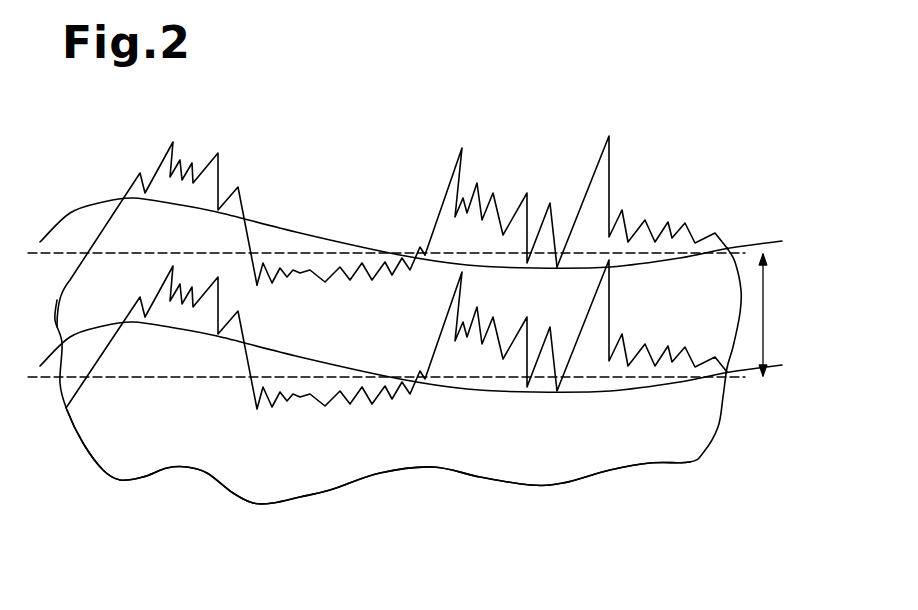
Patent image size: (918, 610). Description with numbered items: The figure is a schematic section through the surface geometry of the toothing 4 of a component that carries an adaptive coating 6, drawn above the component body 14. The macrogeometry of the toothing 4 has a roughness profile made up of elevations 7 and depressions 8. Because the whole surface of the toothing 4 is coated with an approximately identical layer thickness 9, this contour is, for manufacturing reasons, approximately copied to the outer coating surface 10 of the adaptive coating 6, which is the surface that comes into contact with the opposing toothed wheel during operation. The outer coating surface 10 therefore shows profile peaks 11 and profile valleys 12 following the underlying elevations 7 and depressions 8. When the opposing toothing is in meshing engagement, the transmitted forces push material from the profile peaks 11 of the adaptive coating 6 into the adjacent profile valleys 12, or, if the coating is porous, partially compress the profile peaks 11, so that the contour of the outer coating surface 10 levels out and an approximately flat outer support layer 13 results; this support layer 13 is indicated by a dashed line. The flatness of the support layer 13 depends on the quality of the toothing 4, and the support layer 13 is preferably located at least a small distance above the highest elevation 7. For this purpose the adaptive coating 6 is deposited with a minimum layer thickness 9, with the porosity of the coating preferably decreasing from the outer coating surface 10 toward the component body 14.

The toothing 4 is at (664, 428).
The adaptive coating 6 is at (473, 160).
The elevations 7 is at (201, 262).
The depressions 8 is at (339, 362).
The layer thickness 9 is at (777, 298).
The outer coating surface 10 is at (588, 160).
The profile peaks 11 is at (231, 140).
The profile valleys 12 is at (302, 250).
The outer support layer 13 is at (62, 243).
The component body 14 is at (464, 433).